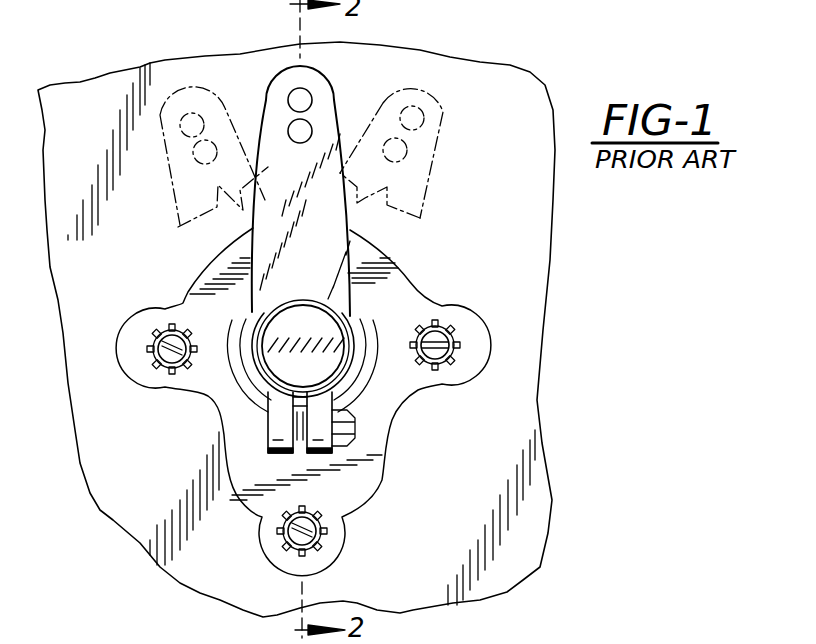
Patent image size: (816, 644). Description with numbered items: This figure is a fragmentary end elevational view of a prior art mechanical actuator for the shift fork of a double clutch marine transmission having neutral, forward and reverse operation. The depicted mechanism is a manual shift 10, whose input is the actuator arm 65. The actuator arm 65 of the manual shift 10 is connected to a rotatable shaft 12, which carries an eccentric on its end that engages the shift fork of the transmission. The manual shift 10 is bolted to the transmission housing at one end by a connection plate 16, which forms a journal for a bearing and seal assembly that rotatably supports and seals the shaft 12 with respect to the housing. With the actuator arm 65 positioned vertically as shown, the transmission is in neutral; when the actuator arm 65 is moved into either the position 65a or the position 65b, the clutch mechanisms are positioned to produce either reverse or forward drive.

The manual shift 10 is at (462, 291).
The rotatable shaft 12 is at (273, 362).
The connection plate 16 is at (404, 400).
The actuator arm 65 is at (340, 273).
The position of actuator arm 65a is at (441, 104).
The position of actuator arm 65b is at (185, 96).